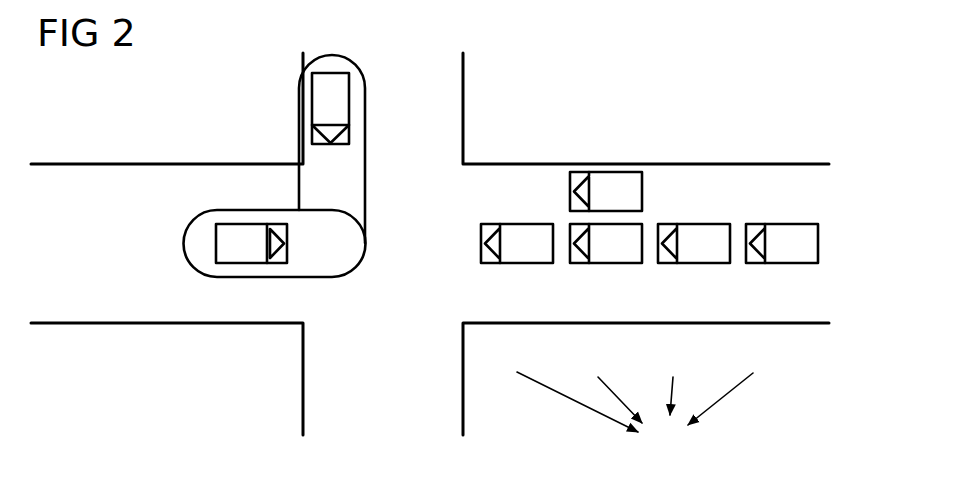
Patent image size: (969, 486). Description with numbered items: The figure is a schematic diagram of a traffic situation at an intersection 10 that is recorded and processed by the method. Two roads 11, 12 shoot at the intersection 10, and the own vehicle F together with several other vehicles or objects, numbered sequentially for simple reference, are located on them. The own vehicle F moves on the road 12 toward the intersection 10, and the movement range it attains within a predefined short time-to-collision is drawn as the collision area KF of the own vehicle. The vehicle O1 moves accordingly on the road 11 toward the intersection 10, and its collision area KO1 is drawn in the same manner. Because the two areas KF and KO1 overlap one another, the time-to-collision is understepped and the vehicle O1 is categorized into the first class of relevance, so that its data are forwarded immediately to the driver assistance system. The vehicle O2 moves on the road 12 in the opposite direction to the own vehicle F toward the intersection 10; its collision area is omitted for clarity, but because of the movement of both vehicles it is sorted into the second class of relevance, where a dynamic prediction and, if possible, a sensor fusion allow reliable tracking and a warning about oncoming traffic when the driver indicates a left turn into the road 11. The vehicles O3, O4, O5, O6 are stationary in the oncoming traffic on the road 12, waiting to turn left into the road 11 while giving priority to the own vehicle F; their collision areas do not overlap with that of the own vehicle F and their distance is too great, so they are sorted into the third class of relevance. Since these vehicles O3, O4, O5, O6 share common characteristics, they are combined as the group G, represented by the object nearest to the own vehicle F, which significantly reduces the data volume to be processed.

The intersection 10 is at (408, 267).
The road 11 is at (457, 110).
The road 12 is at (122, 162).
The own vehicle F is at (241, 232).
The collision area of the own vehicle KF is at (322, 270).
The vehicle O1 is at (331, 80).
The collision area of the vehicle O1 KO1 is at (355, 183).
The vehicle O2 is at (632, 192).
The vehicle O3 is at (525, 253).
The vehicle O4 is at (617, 253).
The vehicle O5 is at (705, 253).
The vehicle O6 is at (792, 253).
The group G is at (635, 416).